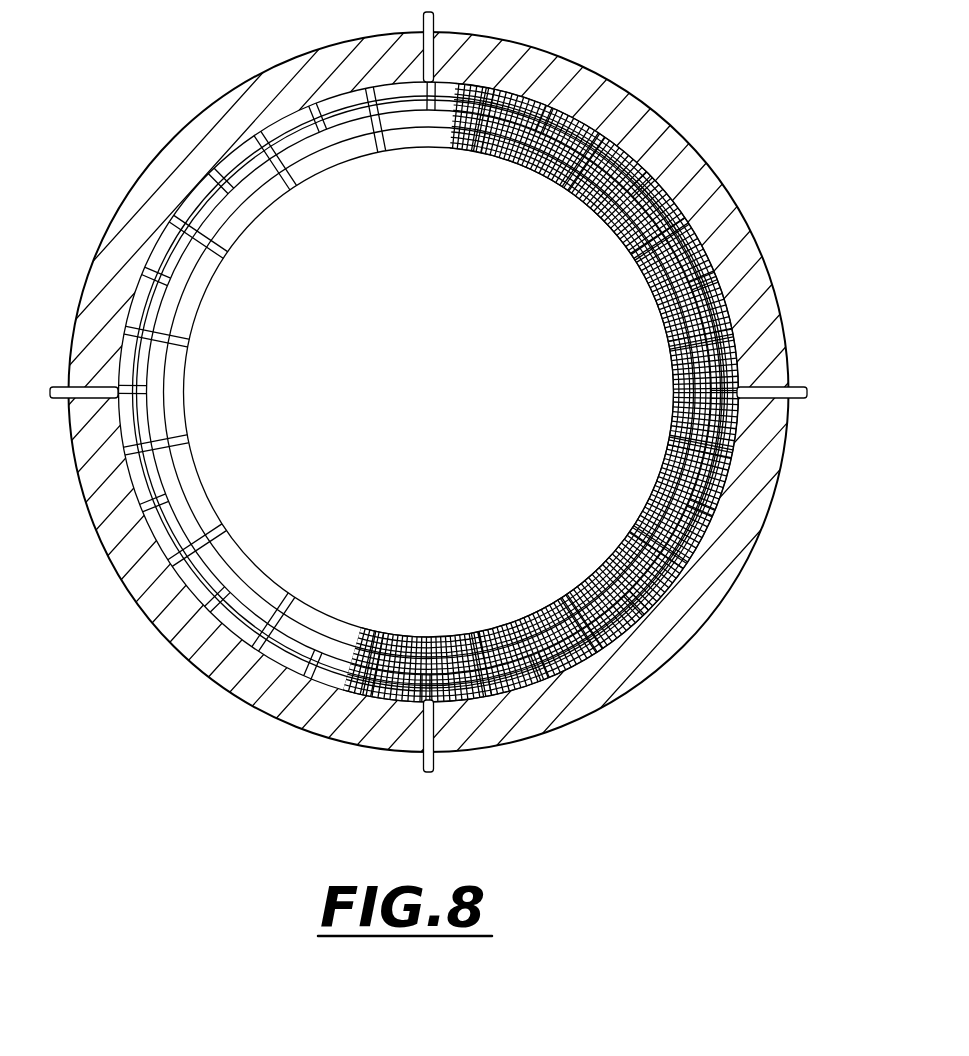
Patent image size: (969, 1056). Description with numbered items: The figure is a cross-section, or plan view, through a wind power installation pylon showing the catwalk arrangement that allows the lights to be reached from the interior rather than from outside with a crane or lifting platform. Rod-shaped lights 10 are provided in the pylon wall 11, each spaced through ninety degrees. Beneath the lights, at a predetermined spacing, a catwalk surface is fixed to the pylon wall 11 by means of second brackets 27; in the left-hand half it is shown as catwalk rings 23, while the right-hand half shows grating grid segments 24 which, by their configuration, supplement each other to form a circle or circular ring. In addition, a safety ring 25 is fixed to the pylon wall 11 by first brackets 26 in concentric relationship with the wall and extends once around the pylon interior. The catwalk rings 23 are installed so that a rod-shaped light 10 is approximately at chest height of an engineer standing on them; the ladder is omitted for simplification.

The rod-shaped light 10 is at (803, 387).
The pylon wall 11 is at (750, 497).
The catwalk rings 23 is at (184, 252).
The grating grid segments 24 is at (650, 497).
The safety ring 25 is at (680, 203).
The first brackets 26 is at (137, 268).
The second brackets 27 is at (114, 453).